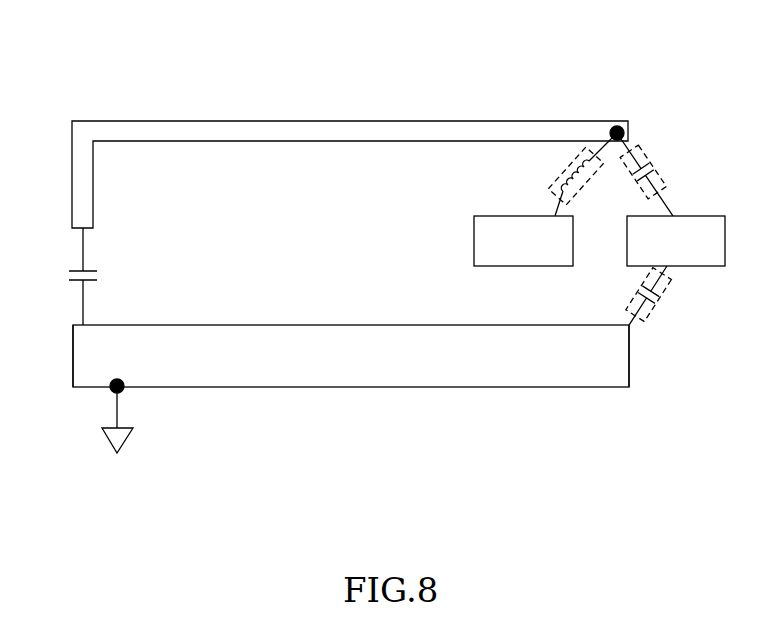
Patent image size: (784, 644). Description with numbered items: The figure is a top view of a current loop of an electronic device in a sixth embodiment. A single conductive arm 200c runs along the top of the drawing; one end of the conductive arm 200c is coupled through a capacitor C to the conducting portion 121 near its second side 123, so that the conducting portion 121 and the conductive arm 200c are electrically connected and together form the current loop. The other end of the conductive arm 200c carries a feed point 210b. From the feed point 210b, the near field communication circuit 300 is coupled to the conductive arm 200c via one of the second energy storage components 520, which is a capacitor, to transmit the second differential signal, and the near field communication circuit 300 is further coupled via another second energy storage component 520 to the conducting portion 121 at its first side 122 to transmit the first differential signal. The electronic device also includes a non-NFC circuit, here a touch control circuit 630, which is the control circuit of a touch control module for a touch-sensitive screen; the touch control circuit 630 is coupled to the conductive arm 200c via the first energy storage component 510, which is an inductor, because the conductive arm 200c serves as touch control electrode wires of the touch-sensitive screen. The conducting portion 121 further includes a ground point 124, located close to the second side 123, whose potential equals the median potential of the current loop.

The conductive arm 200c is at (142, 121).
The feed point 210b is at (620, 127).
The capacitor C is at (66, 276).
The conducting portion 121 is at (427, 387).
The first side 122 is at (629, 357).
The second side 123 is at (73, 355).
The ground point 124 is at (123, 390).
The touch control circuit 630 is at (523, 241).
The near field communication circuit 300 is at (676, 241).
The first energy storage component 510 is at (555, 168).
The second energy storage components 520 is at (673, 173).